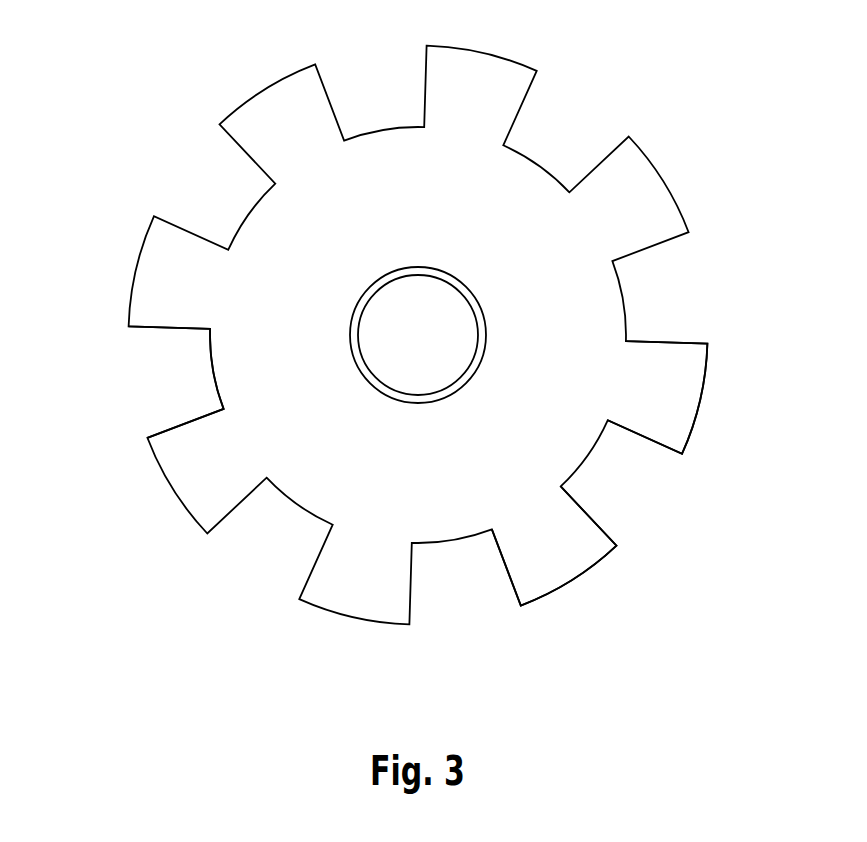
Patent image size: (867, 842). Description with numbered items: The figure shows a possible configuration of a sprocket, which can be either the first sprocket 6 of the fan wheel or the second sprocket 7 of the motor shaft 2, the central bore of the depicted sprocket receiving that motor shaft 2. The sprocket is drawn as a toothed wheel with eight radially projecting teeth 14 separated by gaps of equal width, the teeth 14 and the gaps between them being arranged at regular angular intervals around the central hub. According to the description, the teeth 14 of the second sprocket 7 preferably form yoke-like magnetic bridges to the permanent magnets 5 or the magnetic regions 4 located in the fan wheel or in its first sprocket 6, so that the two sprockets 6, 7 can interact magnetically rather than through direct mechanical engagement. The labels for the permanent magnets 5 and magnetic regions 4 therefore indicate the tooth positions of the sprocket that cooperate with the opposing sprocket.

The motor shaft 2 is at (340, 383).
The magnetic regions 4 is at (713, 400).
The permanent magnets 5 is at (690, 393).
The first sprocket 6 is at (130, 395).
The second sprocket 7 is at (137, 402).
The teeth 14 is at (578, 580).